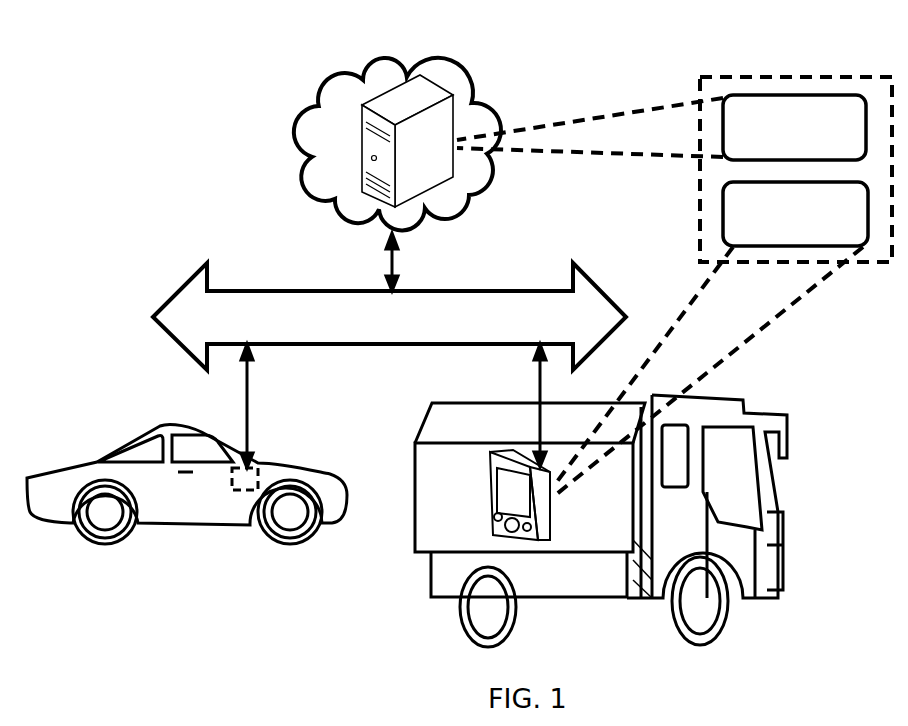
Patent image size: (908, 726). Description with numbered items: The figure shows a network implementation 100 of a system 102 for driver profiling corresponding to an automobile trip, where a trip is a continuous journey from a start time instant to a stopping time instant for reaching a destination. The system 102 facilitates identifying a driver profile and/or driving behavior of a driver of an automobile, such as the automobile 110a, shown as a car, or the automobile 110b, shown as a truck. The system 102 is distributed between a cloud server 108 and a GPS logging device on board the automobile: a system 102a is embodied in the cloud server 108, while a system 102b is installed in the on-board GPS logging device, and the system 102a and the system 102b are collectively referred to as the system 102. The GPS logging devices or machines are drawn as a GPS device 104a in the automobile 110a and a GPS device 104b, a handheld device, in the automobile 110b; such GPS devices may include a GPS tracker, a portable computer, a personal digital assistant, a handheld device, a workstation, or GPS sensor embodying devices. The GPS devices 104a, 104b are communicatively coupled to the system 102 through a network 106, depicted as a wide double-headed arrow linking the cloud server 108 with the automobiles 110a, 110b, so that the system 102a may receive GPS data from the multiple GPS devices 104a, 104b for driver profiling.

The network implementation 100 is at (318, 622).
The system 102 is at (801, 154).
The system 102a is at (794, 127).
The system 102b is at (795, 214).
The GPS device 104a is at (250, 466).
The GPS device 104b is at (522, 452).
The network 106 is at (493, 289).
The cloud server 108 is at (461, 62).
The automobile 110a is at (38, 466).
The automobile 110b is at (737, 398).